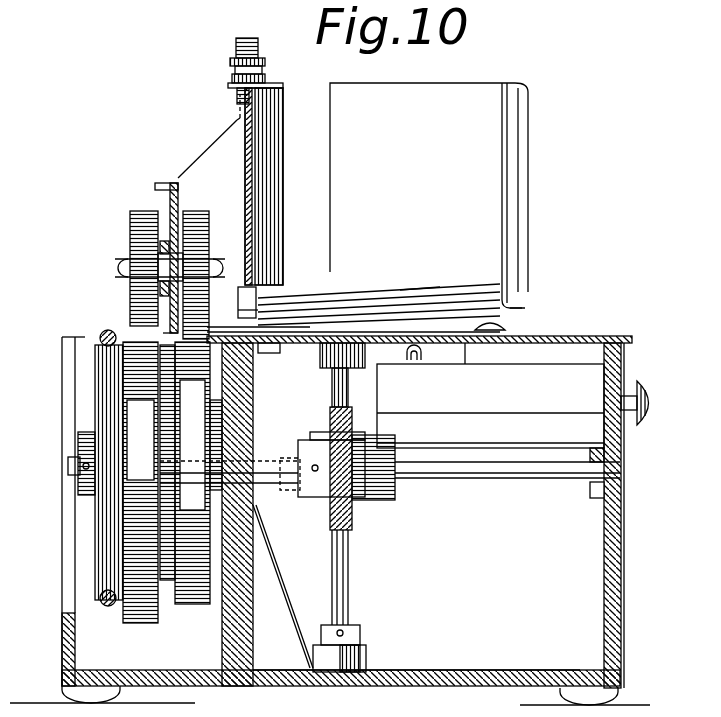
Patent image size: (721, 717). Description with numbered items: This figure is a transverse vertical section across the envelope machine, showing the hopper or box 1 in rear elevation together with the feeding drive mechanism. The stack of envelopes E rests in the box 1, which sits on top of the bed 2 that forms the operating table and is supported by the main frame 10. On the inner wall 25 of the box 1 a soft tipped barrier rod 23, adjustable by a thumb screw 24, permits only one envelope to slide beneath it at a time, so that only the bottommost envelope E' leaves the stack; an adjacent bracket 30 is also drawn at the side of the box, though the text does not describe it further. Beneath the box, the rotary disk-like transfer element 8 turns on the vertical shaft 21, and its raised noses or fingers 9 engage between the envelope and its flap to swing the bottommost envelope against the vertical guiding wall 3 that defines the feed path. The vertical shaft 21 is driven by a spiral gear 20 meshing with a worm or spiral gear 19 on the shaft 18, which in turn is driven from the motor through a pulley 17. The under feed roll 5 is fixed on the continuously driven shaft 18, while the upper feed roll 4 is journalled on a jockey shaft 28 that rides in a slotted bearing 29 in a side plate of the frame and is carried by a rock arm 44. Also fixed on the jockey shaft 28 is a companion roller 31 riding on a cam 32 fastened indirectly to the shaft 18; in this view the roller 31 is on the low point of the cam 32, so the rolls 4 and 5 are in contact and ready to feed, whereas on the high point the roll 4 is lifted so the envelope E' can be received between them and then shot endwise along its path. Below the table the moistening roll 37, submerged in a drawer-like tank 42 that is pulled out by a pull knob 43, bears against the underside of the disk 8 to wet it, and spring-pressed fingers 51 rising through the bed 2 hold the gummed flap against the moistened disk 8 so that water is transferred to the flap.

The hopper or box 1 is at (445, 78).
The bed 2 is at (584, 338).
The vertical guiding wall 3 is at (172, 308).
The upper feed roll 4 is at (199, 220).
The under feed roll 5 is at (200, 430).
The rotary disk-like transfer element 8 is at (305, 343).
The raised noses or fingers 9 is at (505, 327).
The main frame 10 is at (610, 493).
The pulley 17 is at (97, 360).
The shaft 18 is at (73, 467).
The worm or spiral gear 19 is at (400, 530).
The spiral gear 20 is at (400, 485).
The vertical shaft 21 is at (344, 580).
The soft tipped barrier rod 23 is at (262, 302).
The thumb screw 24 is at (266, 76).
The inner wall 25 is at (255, 182).
The jockey shaft 28 is at (179, 263).
The slotted bearing 29 is at (147, 290).
The bracket 30 is at (166, 183).
The companion roller 31 is at (142, 211).
The cam 32 is at (140, 482).
The moistening roll 37 is at (467, 357).
The tank 42 is at (516, 396).
The pull knob 43 is at (647, 397).
The rock arm 44 is at (140, 243).
The fingers 51 is at (277, 345).
The stack of envelopes E is at (405, 272).
The bottommost envelope E' is at (539, 295).